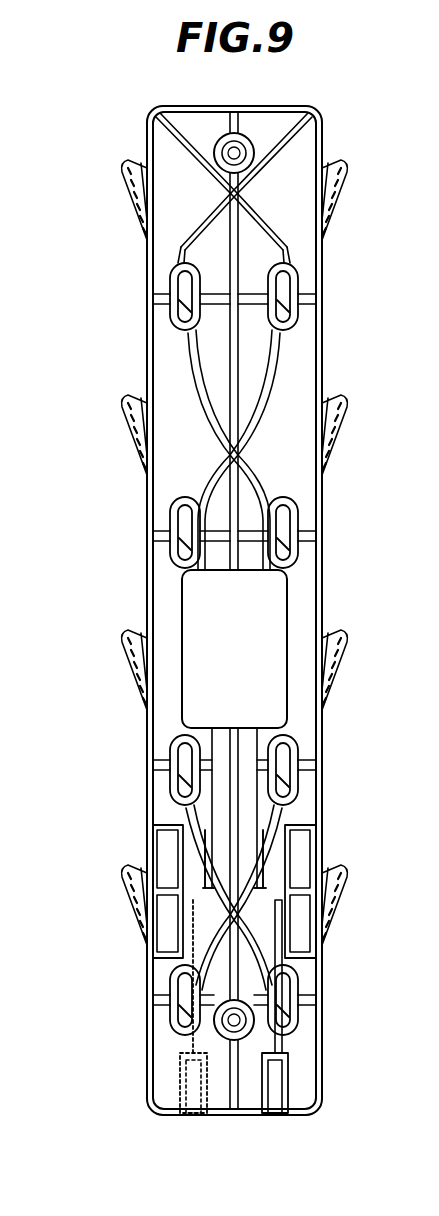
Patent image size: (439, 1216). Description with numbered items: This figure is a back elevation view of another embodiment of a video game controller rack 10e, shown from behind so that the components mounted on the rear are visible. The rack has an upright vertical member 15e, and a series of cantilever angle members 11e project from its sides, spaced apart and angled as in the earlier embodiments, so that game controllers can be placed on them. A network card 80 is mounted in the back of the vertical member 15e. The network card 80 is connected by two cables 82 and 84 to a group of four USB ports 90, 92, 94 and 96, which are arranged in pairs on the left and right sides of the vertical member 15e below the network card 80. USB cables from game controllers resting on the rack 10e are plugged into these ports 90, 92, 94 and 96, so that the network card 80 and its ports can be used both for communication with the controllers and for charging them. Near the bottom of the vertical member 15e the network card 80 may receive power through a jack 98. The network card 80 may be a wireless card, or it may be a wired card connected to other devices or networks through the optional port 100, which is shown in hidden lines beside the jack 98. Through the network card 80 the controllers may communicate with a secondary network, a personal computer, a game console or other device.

The video game controller rack 10e is at (311, 108).
The cantilever angle members 11e is at (378, 146).
The vertical member 15e is at (322, 292).
The network card 80 is at (275, 625).
The cable 82 is at (283, 822).
The cable 84 is at (207, 828).
The USB port 90 is at (316, 848).
The USB port 92 is at (316, 918).
The USB port 94 is at (153, 858).
The USB port 96 is at (153, 922).
The jack 98 is at (275, 1115).
The optional port 100 is at (190, 1118).